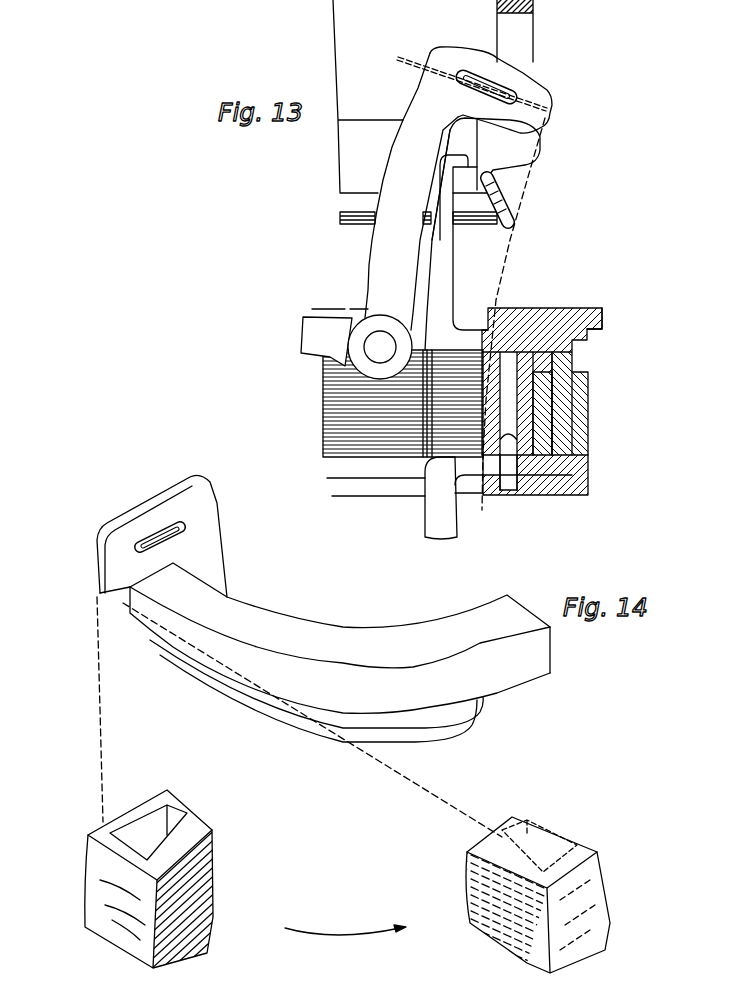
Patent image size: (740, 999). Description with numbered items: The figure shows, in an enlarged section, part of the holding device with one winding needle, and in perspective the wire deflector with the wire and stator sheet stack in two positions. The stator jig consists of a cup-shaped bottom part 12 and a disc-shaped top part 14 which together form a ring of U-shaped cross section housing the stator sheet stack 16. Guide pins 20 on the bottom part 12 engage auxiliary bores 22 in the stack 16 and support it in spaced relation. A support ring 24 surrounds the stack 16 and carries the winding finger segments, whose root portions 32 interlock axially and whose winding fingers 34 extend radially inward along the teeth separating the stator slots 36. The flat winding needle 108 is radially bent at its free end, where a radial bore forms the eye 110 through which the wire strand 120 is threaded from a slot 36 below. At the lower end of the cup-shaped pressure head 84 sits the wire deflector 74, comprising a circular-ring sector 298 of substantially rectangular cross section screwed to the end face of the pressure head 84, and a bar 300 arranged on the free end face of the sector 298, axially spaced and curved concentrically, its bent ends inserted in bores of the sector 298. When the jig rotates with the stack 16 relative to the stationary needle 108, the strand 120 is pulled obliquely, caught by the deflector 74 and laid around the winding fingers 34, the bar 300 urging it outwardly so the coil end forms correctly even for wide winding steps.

In FIG. 13, the bottom part 12 is at (580, 465).
In FIG. 13, the top part 14 is at (597, 318).
In FIG. 13, the stator sheet stack 16 is at (380, 452).
In FIG. 14, the stator sheet stack 16 is at (113, 937).
In FIG. 13, the guide pins 20 is at (510, 467).
In FIG. 13, the auxiliary bores 22 is at (540, 348).
In FIG. 13, the support ring 24 is at (543, 393).
In FIG. 13, the root portions 32 is at (563, 422).
In FIG. 13, the winding fingers 34 is at (448, 294).
In FIG. 14, the stator slots 36 is at (135, 843).
In FIG. 13, the wire deflector 74 is at (520, 172).
In FIG. 14, the wire deflector 74 is at (503, 703).
In FIG. 13, the pressure head 84 is at (536, 4).
In FIG. 13, the winding needle 108 is at (387, 242).
In FIG. 14, the winding needle 108 is at (207, 553).
In FIG. 13, the eye 110 is at (530, 100).
In FIG. 13, the wire strand 120 is at (505, 258).
In FIG. 14, the wire strand 120 is at (105, 713).
In FIG. 13, the circular-ring sector 298 is at (527, 147).
In FIG. 14, the circular-ring sector 298 is at (400, 638).
In FIG. 13, the bar 300 is at (492, 223).
In FIG. 14, the bar 300 is at (453, 737).